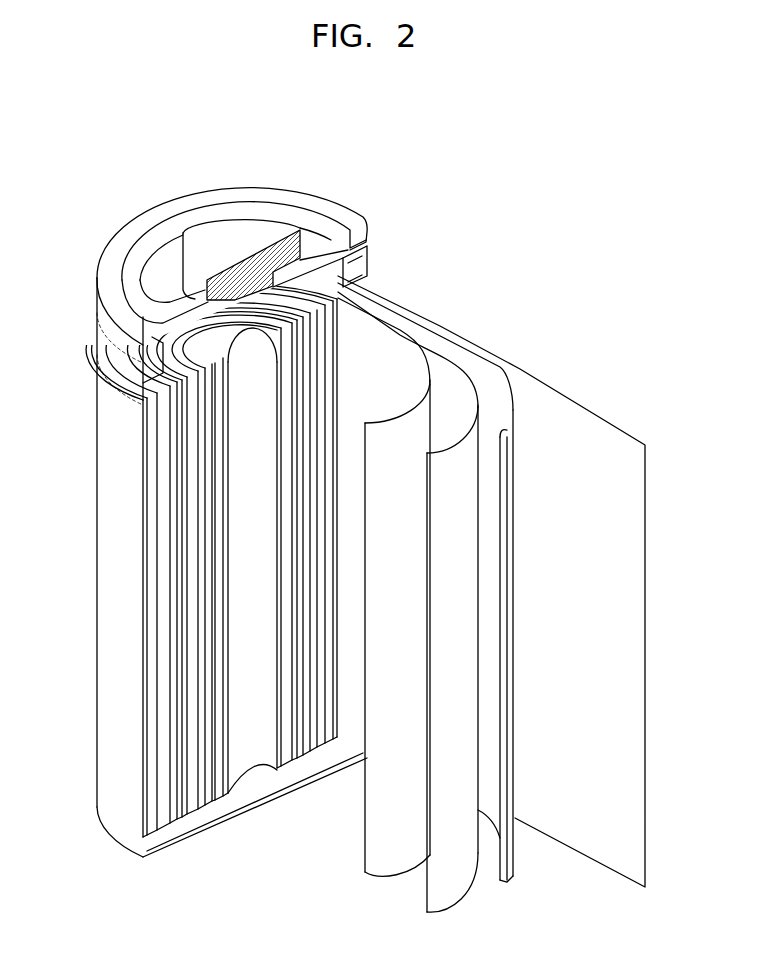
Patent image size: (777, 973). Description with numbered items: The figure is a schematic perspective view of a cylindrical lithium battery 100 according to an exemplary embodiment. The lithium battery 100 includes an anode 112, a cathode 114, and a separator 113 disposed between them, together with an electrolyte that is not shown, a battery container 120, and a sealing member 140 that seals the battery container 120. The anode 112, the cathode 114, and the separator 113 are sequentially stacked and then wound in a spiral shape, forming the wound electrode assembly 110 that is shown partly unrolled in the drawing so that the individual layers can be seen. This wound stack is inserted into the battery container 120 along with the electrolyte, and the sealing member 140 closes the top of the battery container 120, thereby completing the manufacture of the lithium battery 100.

The lithium battery 100 is at (378, 168).
The electrode assembly 110 is at (211, 560).
The anode 112 is at (645, 634).
The separator 113 is at (408, 345).
The cathode 114 is at (455, 378).
The battery container 120 is at (103, 571).
The sealing member 140 is at (242, 224).